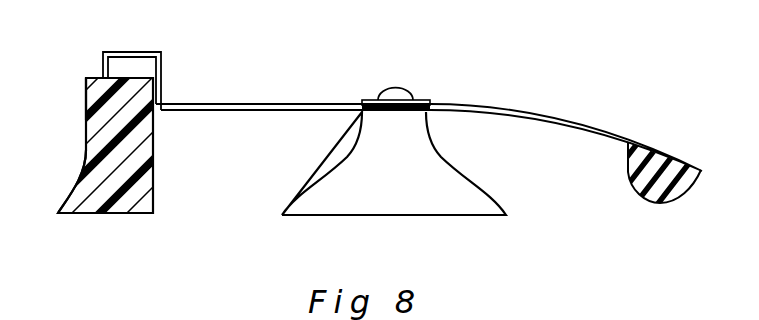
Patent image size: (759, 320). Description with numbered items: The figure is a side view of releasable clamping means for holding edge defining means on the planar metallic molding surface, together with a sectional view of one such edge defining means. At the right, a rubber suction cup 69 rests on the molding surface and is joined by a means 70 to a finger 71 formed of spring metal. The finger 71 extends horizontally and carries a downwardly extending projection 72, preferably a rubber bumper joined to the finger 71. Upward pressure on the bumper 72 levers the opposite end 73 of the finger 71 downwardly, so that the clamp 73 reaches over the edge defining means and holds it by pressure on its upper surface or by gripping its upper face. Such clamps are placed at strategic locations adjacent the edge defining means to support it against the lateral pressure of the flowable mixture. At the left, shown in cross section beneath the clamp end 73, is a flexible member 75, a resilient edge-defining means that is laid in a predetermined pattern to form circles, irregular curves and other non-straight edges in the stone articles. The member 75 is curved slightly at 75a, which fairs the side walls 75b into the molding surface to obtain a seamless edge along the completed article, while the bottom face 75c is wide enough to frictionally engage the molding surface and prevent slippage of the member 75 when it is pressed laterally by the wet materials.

The rubber suction cup 69 is at (468, 171).
The means 70 is at (412, 90).
The finger 71 is at (320, 103).
The projection 72 is at (629, 178).
The end 73 is at (138, 49).
The flexible member 75 is at (86, 134).
The curved portion 75a is at (64, 208).
The side walls 75b is at (86, 98).
The face 75c is at (132, 215).